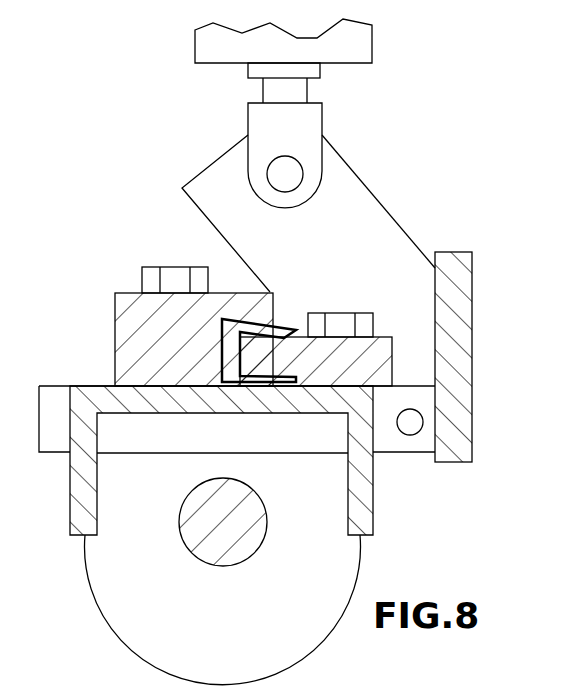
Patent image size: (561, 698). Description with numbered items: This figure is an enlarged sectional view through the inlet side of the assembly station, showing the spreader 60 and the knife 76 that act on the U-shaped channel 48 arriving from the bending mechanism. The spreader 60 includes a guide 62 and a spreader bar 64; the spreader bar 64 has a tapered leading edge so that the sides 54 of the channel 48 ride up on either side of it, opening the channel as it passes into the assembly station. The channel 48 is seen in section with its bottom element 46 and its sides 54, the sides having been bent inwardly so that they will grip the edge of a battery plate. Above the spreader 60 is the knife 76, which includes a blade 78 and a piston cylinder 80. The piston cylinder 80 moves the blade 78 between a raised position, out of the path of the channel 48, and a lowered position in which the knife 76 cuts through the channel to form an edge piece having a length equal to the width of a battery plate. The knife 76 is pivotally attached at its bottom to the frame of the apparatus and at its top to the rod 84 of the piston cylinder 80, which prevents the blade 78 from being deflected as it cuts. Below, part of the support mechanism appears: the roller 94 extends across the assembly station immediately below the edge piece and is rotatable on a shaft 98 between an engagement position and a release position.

The piston cylinder 80 is at (365, 44).
The rod 84 is at (266, 96).
The knife 76 is at (329, 189).
The blade 78 is at (392, 228).
The guide 62 is at (128, 298).
The spreader 60 is at (224, 338).
The spreader bar 64 is at (386, 350).
The sides 54 is at (265, 318).
The U-shaped channel 48 is at (286, 350).
The bottom element 46 is at (220, 355).
The roller 94 is at (142, 614).
The shaft 98 is at (205, 552).